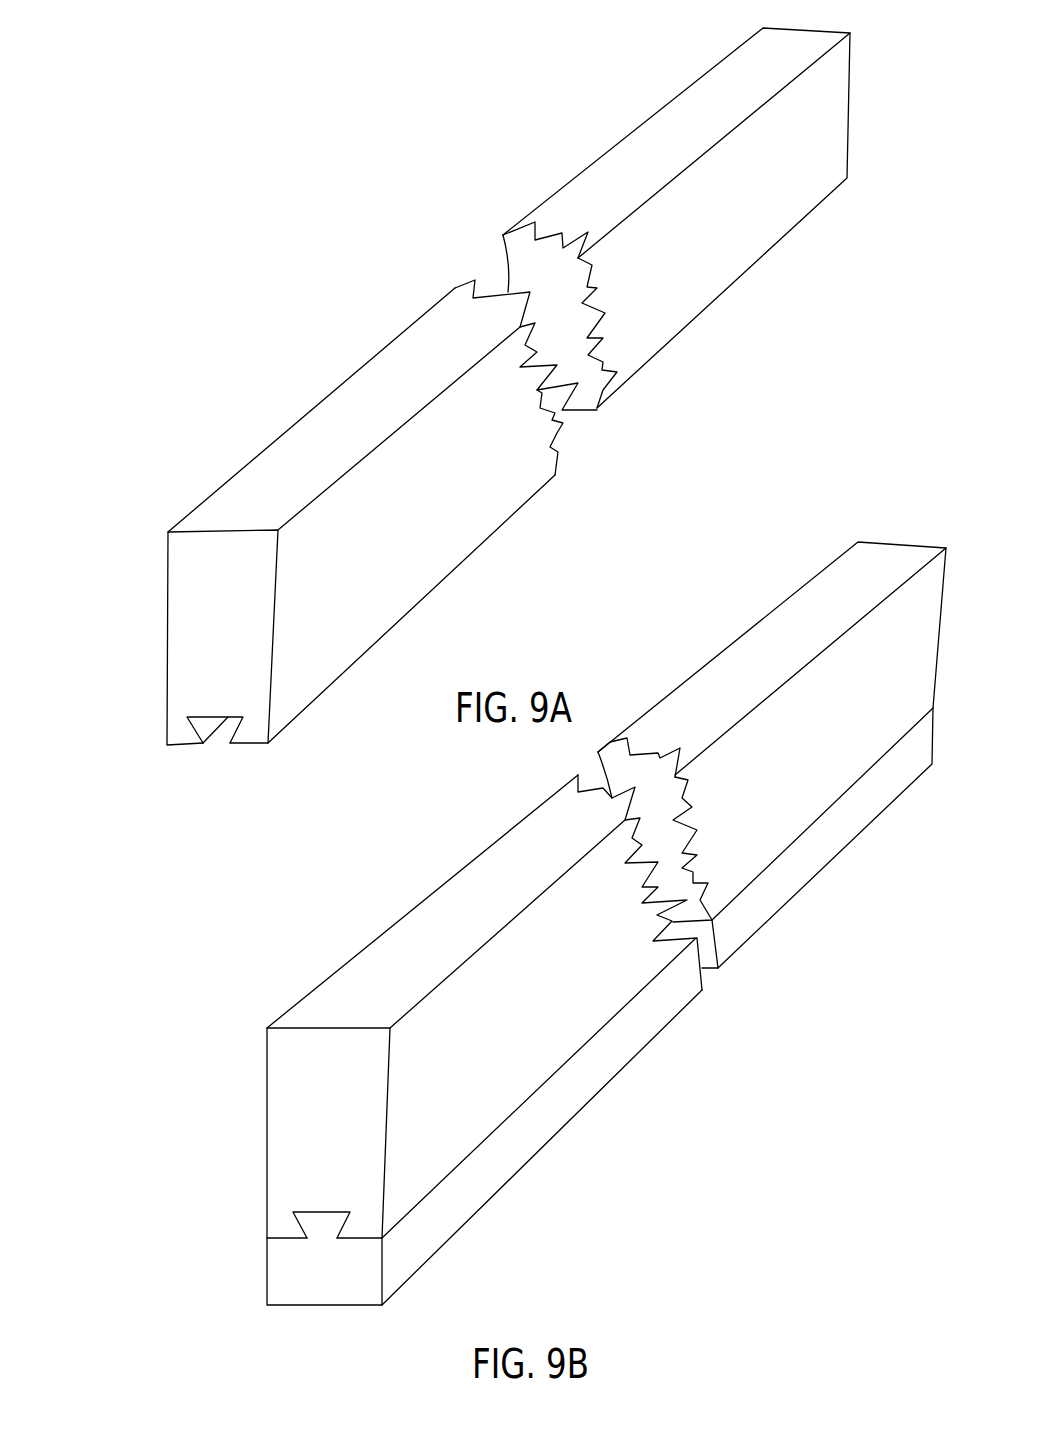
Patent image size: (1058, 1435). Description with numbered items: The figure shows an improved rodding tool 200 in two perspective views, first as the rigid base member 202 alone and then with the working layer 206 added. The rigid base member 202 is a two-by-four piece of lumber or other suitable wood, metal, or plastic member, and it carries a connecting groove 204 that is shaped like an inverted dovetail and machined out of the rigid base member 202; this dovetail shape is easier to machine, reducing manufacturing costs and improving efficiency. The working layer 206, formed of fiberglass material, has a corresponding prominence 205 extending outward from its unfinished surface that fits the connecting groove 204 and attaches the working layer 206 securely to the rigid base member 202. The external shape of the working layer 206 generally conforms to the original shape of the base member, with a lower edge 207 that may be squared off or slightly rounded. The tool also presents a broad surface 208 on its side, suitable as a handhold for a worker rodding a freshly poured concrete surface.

In FIG. 9A, the improved rodding tool 200 is at (337, 272).
In FIG. 9B, the improved rodding tool 200 is at (805, 512).
In FIG. 9A, the rigid base member 202 is at (262, 490).
In FIG. 9A, the connecting groove 204 is at (230, 760).
In FIG. 9B, the prominence 205 is at (320, 1240).
In FIG. 9B, the working layer 206 is at (745, 905).
In FIG. 9B, the lower edge 207 is at (822, 875).
In FIG. 9A, the broad surface 208 is at (455, 465).
In FIG. 9B, the broad surface 208 is at (520, 1005).